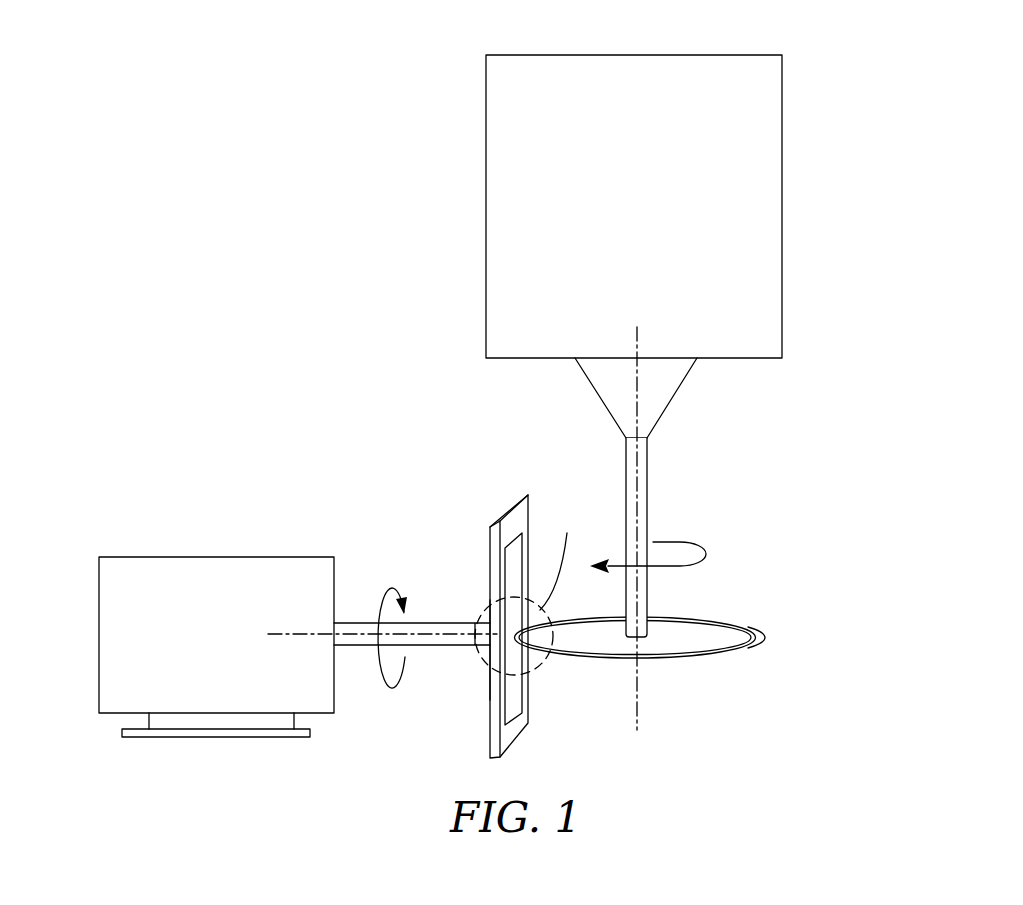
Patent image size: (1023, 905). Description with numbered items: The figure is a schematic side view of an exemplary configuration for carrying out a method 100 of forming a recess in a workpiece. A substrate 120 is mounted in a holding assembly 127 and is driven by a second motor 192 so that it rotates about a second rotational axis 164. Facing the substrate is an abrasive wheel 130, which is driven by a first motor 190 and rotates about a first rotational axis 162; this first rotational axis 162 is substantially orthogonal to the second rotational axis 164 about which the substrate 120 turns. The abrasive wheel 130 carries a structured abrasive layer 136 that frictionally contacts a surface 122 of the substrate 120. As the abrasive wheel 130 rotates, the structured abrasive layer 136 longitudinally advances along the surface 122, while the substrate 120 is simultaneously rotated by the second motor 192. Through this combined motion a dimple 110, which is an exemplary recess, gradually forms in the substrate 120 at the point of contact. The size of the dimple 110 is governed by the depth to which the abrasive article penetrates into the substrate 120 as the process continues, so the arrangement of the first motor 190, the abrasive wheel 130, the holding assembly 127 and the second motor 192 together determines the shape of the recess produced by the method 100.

The method 100 is at (547, 418).
The dimple 110 is at (517, 642).
The substrate 120 is at (508, 638).
The surface 122 is at (513, 713).
The holding assembly 127 is at (493, 737).
The abrasive wheel 130 is at (733, 616).
The structured abrasive layer 136 is at (754, 634).
The first rotational axis 162 is at (637, 408).
The second rotational axis 164 is at (430, 632).
The first motor 190 is at (782, 183).
The second motor 192 is at (223, 575).